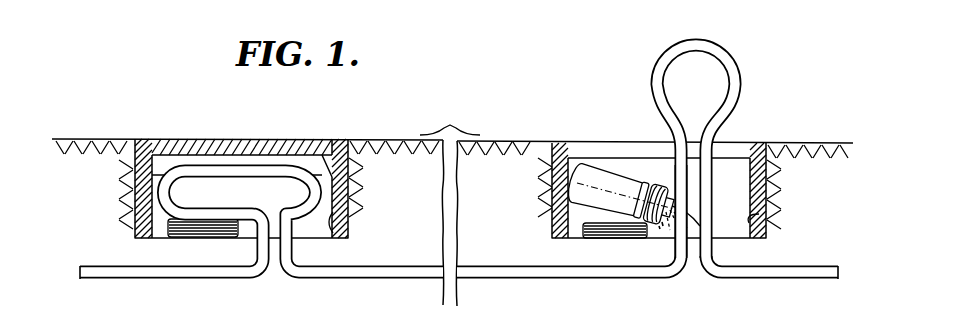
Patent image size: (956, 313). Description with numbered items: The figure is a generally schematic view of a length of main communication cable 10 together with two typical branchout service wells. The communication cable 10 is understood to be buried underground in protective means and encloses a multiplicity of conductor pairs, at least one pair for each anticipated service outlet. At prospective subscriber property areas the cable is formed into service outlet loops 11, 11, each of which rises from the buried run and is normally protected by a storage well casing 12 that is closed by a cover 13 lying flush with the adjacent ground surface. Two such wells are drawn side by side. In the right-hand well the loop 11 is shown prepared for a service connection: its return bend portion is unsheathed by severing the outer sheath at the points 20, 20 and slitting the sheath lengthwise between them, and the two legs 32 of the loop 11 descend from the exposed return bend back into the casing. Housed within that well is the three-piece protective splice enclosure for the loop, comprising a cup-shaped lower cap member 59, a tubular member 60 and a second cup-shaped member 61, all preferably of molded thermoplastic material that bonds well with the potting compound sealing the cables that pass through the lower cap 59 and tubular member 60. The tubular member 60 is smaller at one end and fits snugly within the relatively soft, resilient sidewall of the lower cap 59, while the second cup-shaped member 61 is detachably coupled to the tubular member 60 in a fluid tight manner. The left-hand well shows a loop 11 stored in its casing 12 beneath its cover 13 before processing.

The communication cable 10 is at (549, 288).
The service outlet loop 11 is at (292, 162).
The storage well casing 12 is at (759, 219).
The cover 13 is at (203, 152).
The sheath severing points 20 is at (722, 128).
The legs of loop 32 is at (679, 173).
The cup-shaped lower cap member 59 is at (661, 231).
The tubular member 60 is at (654, 164).
The second cup-shaped member 61 is at (609, 150).